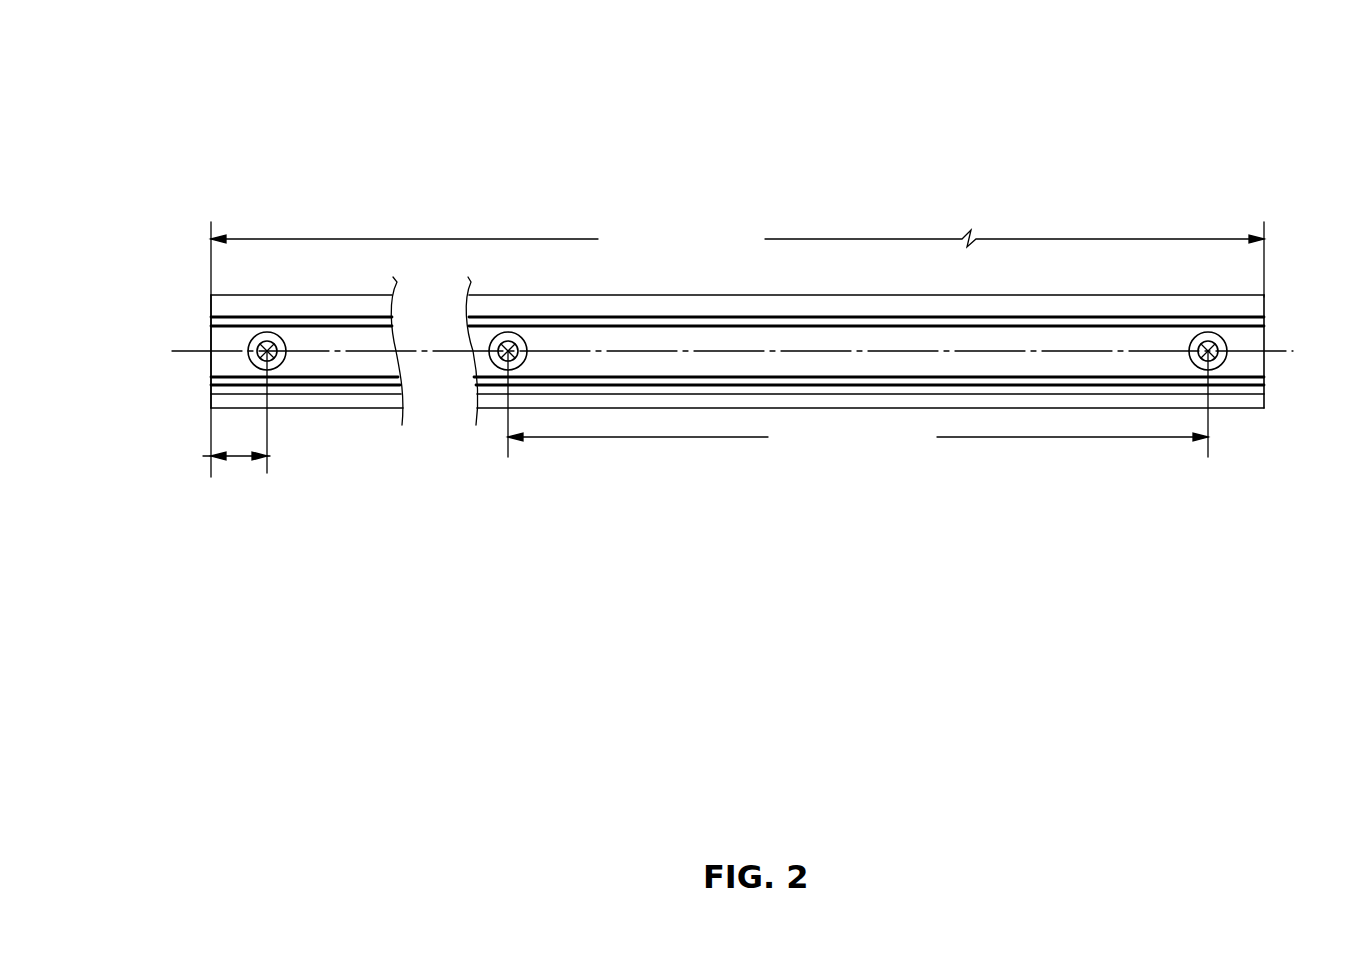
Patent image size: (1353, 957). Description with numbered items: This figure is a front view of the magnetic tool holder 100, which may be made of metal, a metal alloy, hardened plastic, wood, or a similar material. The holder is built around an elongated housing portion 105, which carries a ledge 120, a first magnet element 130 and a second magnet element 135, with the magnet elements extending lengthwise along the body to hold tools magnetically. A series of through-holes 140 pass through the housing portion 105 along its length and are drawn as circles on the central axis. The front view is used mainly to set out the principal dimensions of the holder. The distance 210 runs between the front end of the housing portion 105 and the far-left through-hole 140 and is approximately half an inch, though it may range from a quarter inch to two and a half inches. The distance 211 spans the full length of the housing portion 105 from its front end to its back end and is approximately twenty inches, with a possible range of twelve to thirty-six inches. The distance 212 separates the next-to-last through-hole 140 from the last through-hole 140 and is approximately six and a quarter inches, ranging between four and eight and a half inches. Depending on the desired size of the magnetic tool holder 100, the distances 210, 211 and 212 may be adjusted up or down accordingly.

The magnetic tool holder 100 is at (730, 231).
The housing portion 105 is at (213, 300).
The ledge 120 is at (213, 393).
The first magnet element 130 is at (1263, 319).
The second magnet element 135 is at (1263, 382).
The through-holes 140 is at (270, 348).
The distance 210 is at (238, 480).
The distance 211 is at (678, 237).
The distance 212 is at (833, 438).